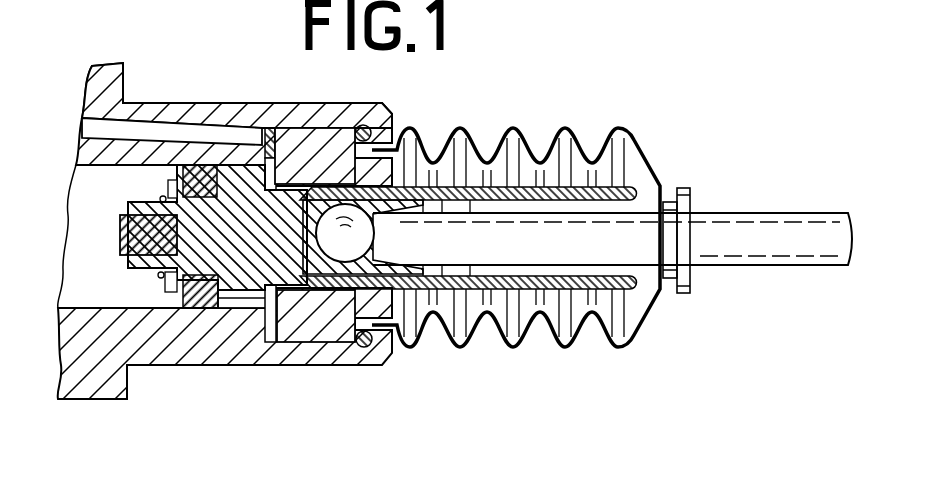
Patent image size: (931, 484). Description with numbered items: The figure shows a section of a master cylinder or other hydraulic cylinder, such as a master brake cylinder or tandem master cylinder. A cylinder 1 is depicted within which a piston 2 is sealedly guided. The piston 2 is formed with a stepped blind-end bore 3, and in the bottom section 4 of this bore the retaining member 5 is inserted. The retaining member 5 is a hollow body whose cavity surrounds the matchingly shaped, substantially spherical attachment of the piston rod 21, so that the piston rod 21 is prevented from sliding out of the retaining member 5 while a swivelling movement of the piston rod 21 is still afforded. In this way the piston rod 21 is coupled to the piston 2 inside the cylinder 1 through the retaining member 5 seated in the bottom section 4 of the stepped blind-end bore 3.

The cylinder 1 is at (100, 380).
The piston 2 is at (243, 255).
The stepped blind-end bore 3 is at (553, 278).
The bottom section 4 is at (343, 277).
The retaining member 5 is at (303, 287).
The piston rod 21 is at (578, 233).